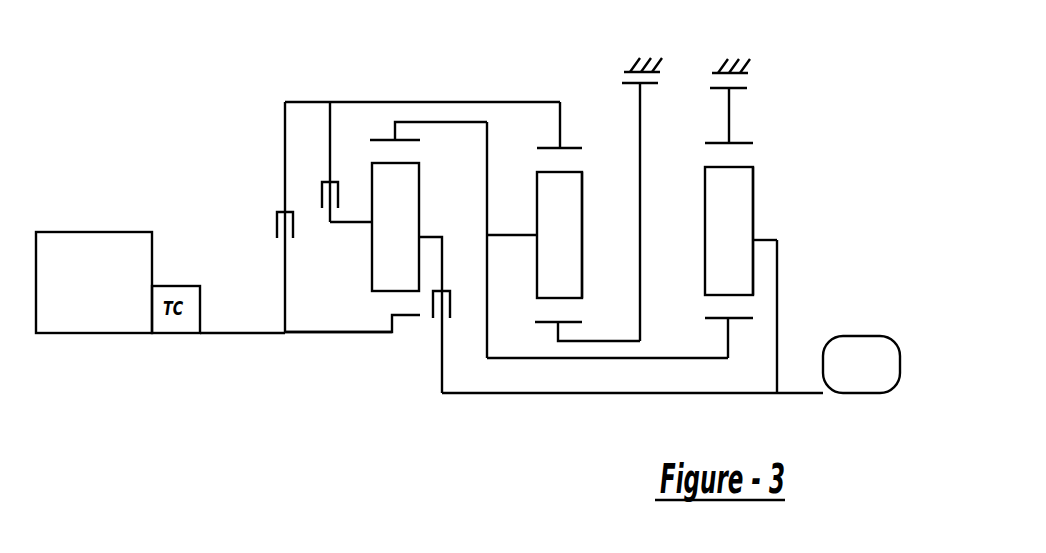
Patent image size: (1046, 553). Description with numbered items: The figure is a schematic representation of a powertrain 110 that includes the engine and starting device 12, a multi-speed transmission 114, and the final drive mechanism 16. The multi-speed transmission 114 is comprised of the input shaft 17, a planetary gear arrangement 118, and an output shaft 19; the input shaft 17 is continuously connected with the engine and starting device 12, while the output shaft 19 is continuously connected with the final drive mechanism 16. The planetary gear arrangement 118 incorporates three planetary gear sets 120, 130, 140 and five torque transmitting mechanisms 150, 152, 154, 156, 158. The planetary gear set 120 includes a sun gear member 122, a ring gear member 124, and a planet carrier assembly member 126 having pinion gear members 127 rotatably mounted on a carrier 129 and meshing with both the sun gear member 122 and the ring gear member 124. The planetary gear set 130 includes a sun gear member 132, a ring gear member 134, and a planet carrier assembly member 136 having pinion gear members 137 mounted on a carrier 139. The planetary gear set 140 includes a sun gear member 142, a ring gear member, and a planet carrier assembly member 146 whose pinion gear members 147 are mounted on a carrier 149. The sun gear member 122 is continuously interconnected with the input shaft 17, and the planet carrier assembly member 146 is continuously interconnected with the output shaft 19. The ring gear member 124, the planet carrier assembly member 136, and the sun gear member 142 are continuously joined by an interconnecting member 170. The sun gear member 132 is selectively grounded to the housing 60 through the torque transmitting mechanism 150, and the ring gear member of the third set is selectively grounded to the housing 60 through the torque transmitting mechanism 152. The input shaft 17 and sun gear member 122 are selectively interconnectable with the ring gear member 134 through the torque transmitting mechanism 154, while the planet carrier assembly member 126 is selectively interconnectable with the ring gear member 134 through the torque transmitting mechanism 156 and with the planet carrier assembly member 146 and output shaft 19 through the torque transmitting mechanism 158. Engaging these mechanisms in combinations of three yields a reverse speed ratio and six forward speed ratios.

The powertrain 110 is at (137, 124).
The engine and starting device 12 is at (86, 228).
The input shaft 17 is at (242, 337).
The torque transmitting mechanism 154 is at (266, 204).
The multi-speed transmission 114 is at (455, 88).
The torque transmitting mechanism 156 is at (307, 181).
The planet carrier assembly member 126 is at (355, 181).
The carrier 129 is at (362, 222).
The ring gear member 124 is at (375, 140).
The pinion gear members 127 is at (372, 260).
The sun gear member 122 is at (392, 315).
The planetary gear set 120 is at (377, 348).
The planetary gear arrangement 118 is at (407, 350).
The torque transmitting mechanism 158 is at (423, 342).
The carrier 139 is at (503, 234).
The ring gear member 134 is at (573, 146).
The planet carrier assembly member 136 is at (592, 198).
The pinion gear members 137 is at (582, 267).
The sun gear member 132 is at (556, 322).
The torque transmitting mechanism 150 is at (654, 80).
The housing 60 is at (644, 52).
The torque transmitting mechanism 152 is at (744, 82).
The planet carrier assembly member 146 is at (777, 190).
The pinion gear members 147 is at (735, 223).
The carrier 149 is at (768, 238).
The planetary gear set 140 is at (760, 307).
The sun gear member 142 is at (718, 317).
The interconnecting member 170 is at (628, 360).
The planetary gear set 130 is at (546, 344).
The output shaft 19 is at (795, 394).
The final drive mechanism 16 is at (850, 331).